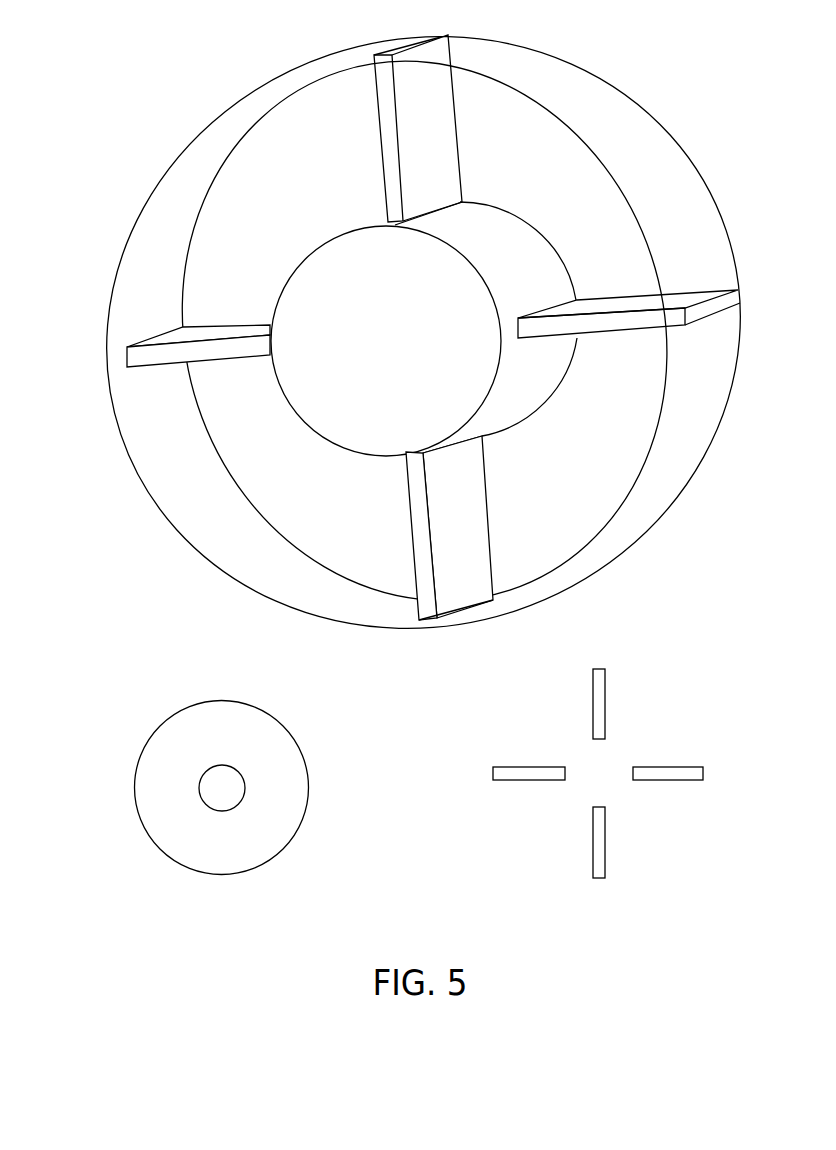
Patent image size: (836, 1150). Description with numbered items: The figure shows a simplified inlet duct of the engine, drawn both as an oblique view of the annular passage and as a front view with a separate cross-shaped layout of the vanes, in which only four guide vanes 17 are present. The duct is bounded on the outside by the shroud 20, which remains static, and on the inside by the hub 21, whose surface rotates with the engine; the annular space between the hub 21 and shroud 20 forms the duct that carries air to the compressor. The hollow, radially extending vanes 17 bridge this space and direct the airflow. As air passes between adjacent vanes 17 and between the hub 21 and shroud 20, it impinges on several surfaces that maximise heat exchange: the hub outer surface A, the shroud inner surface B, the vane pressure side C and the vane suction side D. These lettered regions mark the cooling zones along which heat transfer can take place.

The guide vane 17 is at (198, 333).
The shroud 20 is at (112, 413).
The hub 21 is at (322, 437).
The hub outer surface A is at (202, 840).
The shroud inner surface B is at (268, 795).
The vane pressure side C is at (606, 713).
The vane suction side D is at (347, 134).